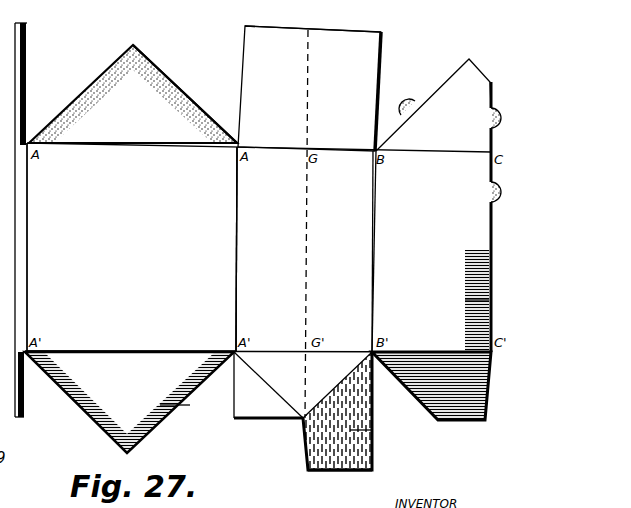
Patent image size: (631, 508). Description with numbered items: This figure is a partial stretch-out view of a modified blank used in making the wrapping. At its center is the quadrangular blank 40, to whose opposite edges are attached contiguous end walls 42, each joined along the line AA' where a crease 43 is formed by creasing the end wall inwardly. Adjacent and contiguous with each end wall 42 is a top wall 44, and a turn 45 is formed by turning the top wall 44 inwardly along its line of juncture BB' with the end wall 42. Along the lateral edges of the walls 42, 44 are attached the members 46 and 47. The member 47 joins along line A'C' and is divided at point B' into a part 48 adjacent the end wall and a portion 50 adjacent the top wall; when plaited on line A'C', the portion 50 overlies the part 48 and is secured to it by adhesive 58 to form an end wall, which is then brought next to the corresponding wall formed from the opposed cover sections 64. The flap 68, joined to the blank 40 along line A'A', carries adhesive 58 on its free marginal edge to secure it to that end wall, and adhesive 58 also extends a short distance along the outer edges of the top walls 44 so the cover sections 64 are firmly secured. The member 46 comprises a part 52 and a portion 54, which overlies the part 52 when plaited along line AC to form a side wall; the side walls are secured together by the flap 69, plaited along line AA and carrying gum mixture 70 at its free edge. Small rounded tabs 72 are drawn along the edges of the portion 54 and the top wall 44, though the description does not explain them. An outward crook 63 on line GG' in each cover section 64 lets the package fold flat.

The quadrangular blank 40 is at (132, 247).
The end wall 42 is at (304, 249).
The crease 43 is at (240, 229).
The top wall 44 is at (448, 277).
The turn 45 is at (373, 300).
The member 46 is at (414, 15).
The member 47 is at (397, 482).
The part 48 is at (303, 411).
The portion 50 is at (432, 376).
The part 52 is at (309, 88).
The portion 54 is at (433, 120).
The adhesive 58 is at (487, 305).
The outward crook 63 is at (308, 249).
The cover section 64 is at (493, 300).
The flap 68 is at (129, 402).
The flap 69 is at (133, 94).
The gum mixture 70 is at (144, 52).
The locking tabs 72 is at (409, 99).